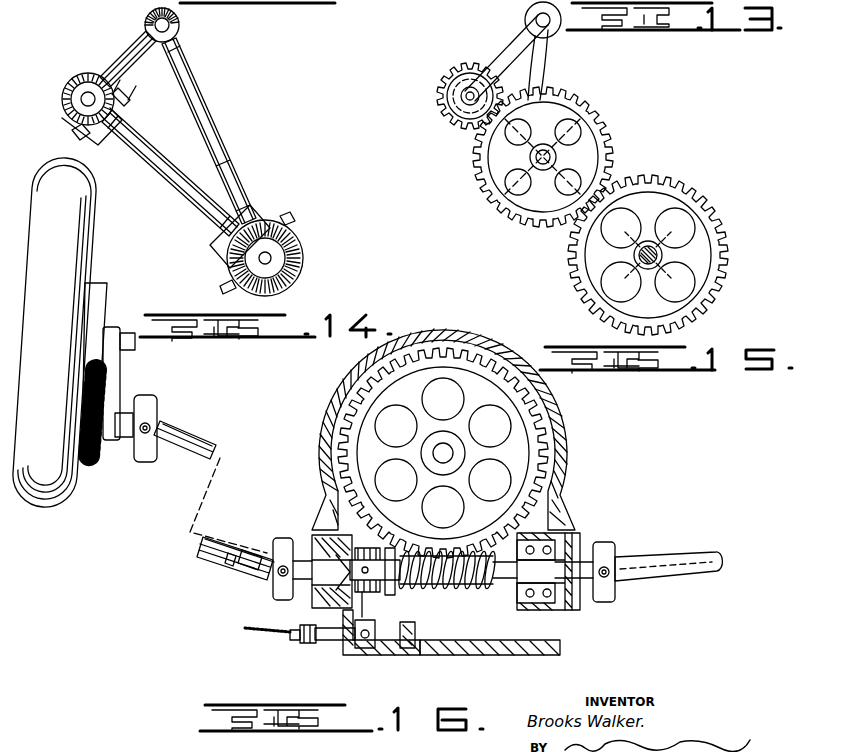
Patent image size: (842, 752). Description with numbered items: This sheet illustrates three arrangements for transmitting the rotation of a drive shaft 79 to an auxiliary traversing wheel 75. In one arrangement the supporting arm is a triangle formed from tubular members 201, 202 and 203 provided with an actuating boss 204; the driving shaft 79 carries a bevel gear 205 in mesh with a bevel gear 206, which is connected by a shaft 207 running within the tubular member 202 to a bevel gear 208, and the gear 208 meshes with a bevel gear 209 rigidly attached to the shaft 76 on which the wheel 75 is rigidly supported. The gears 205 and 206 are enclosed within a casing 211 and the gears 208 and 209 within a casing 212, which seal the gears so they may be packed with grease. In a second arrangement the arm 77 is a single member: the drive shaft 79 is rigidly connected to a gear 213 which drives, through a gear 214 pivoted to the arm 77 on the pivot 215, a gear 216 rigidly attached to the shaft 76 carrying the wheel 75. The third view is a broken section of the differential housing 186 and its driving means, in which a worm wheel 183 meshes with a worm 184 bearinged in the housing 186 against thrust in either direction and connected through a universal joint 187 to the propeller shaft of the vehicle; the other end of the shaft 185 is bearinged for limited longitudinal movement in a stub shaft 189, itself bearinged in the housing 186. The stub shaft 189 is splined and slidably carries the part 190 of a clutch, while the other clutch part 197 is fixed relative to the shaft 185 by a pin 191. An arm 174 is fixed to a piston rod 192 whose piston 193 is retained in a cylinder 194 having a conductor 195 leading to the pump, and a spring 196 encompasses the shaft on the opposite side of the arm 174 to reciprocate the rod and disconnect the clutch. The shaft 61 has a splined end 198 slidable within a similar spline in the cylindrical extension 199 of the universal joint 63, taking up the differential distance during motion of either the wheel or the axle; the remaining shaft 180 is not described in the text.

In FIG. 14, the tubular member 201 is at (218, 128).
In FIG. 14, the tubular member 202 is at (164, 152).
In FIG. 14, the tubular member 203 is at (142, 52).
In FIG. 14, the actuating boss 204 is at (179, 24).
In FIG. 14, the bevel gear 205 is at (72, 86).
In FIG. 14, the bevel gear 206 is at (128, 98).
In FIG. 14, the shaft 207 is at (152, 163).
In FIG. 14, the bevel gear 208 is at (218, 254).
In FIG. 14, the bevel gear 209 is at (302, 258).
In FIG. 14, the casing 211 is at (72, 118).
In FIG. 14, the casing 212 is at (292, 222).
In FIG. 14, the shaft 76 is at (258, 270).
In FIG. 15, the shaft 76 is at (660, 255).
In FIG. 14, the driving shaft 79 is at (80, 99).
In FIG. 15, the driving shaft 79 is at (462, 94).
In FIG. 15, the gear 213 is at (458, 66).
In FIG. 15, the gear 214 is at (586, 120).
In FIG. 15, the pivot 215 is at (543, 157).
In FIG. 15, the gear 216 is at (680, 187).
In FIG. 15, the arm 77 is at (530, 84).
In FIG. 16, the shaft 61 is at (192, 426).
In FIG. 16, the universal joint 63 is at (283, 540).
In FIG. 16, the traversing wheel 75 is at (70, 480).
In FIG. 16, the arm 174 is at (378, 628).
In FIG. 16, the shaft 180 is at (695, 578).
In FIG. 16, the worm wheel 183 is at (555, 446).
In FIG. 16, the worm 184 is at (506, 626).
In FIG. 16, the shaft 185 is at (520, 612).
In FIG. 16, the differential housing 186 is at (558, 536).
In FIG. 16, the universal joint 187 is at (614, 548).
In FIG. 16, the stub shaft 189 is at (312, 600).
In FIG. 16, the clutch part 190 is at (390, 594).
In FIG. 16, the pin 191 is at (428, 592).
In FIG. 16, the piston rod 192 is at (337, 645).
In FIG. 16, the piston 193 is at (304, 644).
In FIG. 16, the cylinder 194 is at (293, 640).
In FIG. 16, the conductor 195 is at (246, 629).
In FIG. 16, the spring 196 is at (362, 656).
In FIG. 16, the clutch part 197 is at (396, 546).
In FIG. 16, the splined end 198 is at (230, 540).
In FIG. 16, the cylindrical extension 199 is at (252, 572).